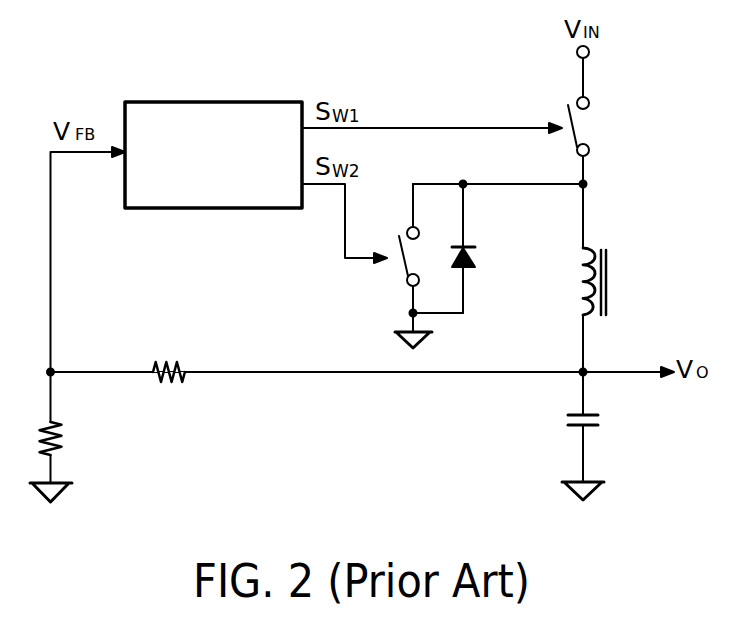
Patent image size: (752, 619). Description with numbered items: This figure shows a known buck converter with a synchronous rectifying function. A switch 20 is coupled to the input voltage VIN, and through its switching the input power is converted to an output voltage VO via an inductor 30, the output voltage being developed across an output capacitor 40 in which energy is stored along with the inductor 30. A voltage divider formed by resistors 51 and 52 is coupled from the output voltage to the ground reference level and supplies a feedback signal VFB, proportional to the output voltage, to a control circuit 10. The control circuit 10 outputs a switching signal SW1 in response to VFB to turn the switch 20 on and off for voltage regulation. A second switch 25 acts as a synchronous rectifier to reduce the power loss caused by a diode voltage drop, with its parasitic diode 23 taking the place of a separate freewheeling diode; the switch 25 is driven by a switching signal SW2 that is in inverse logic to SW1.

The control circuit 10 is at (166, 99).
The switch 20 is at (596, 124).
The switch 25 is at (396, 278).
The parasitic diode 23 is at (483, 257).
The inductor 30 is at (611, 282).
The output capacitor 40 is at (600, 422).
The resistor 51 is at (166, 357).
The resistor 52 is at (65, 440).